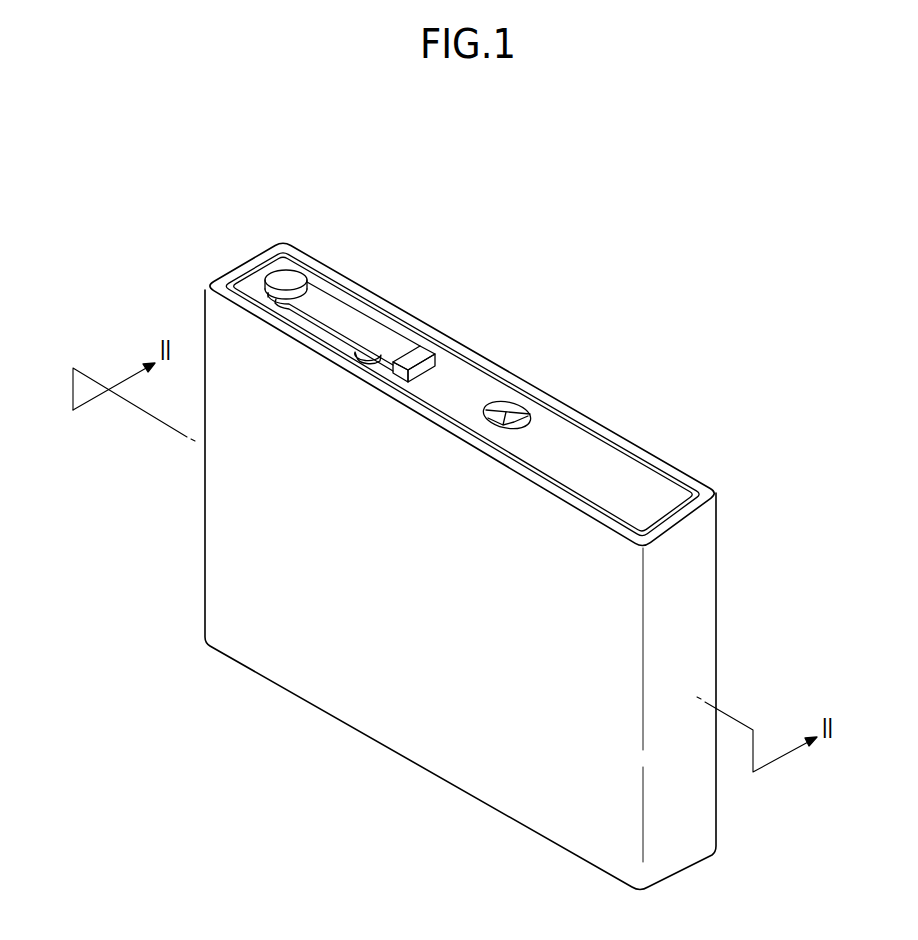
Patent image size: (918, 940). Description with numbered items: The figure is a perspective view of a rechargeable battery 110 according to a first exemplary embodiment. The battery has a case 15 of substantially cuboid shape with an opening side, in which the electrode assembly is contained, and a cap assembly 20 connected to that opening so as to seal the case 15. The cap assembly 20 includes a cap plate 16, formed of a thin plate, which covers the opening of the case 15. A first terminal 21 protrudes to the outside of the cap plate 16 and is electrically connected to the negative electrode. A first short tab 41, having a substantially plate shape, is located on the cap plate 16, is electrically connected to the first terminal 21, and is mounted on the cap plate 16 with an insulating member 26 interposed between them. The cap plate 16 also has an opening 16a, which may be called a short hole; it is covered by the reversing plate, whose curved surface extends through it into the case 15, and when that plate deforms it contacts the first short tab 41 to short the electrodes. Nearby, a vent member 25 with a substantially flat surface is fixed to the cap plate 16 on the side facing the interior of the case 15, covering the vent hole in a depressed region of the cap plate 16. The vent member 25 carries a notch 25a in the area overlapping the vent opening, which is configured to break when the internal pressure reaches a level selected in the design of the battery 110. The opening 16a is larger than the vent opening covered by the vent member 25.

The rechargeable battery 110 is at (567, 244).
The case 15 is at (407, 742).
The cap assembly 20 is at (473, 394).
The cap plate 16 is at (652, 482).
The opening 16a is at (372, 358).
The first terminal 21 is at (292, 272).
The first short tab 41 is at (334, 312).
The insulating member 26 is at (421, 352).
The vent member 25 is at (546, 375).
The notch 25a is at (503, 413).